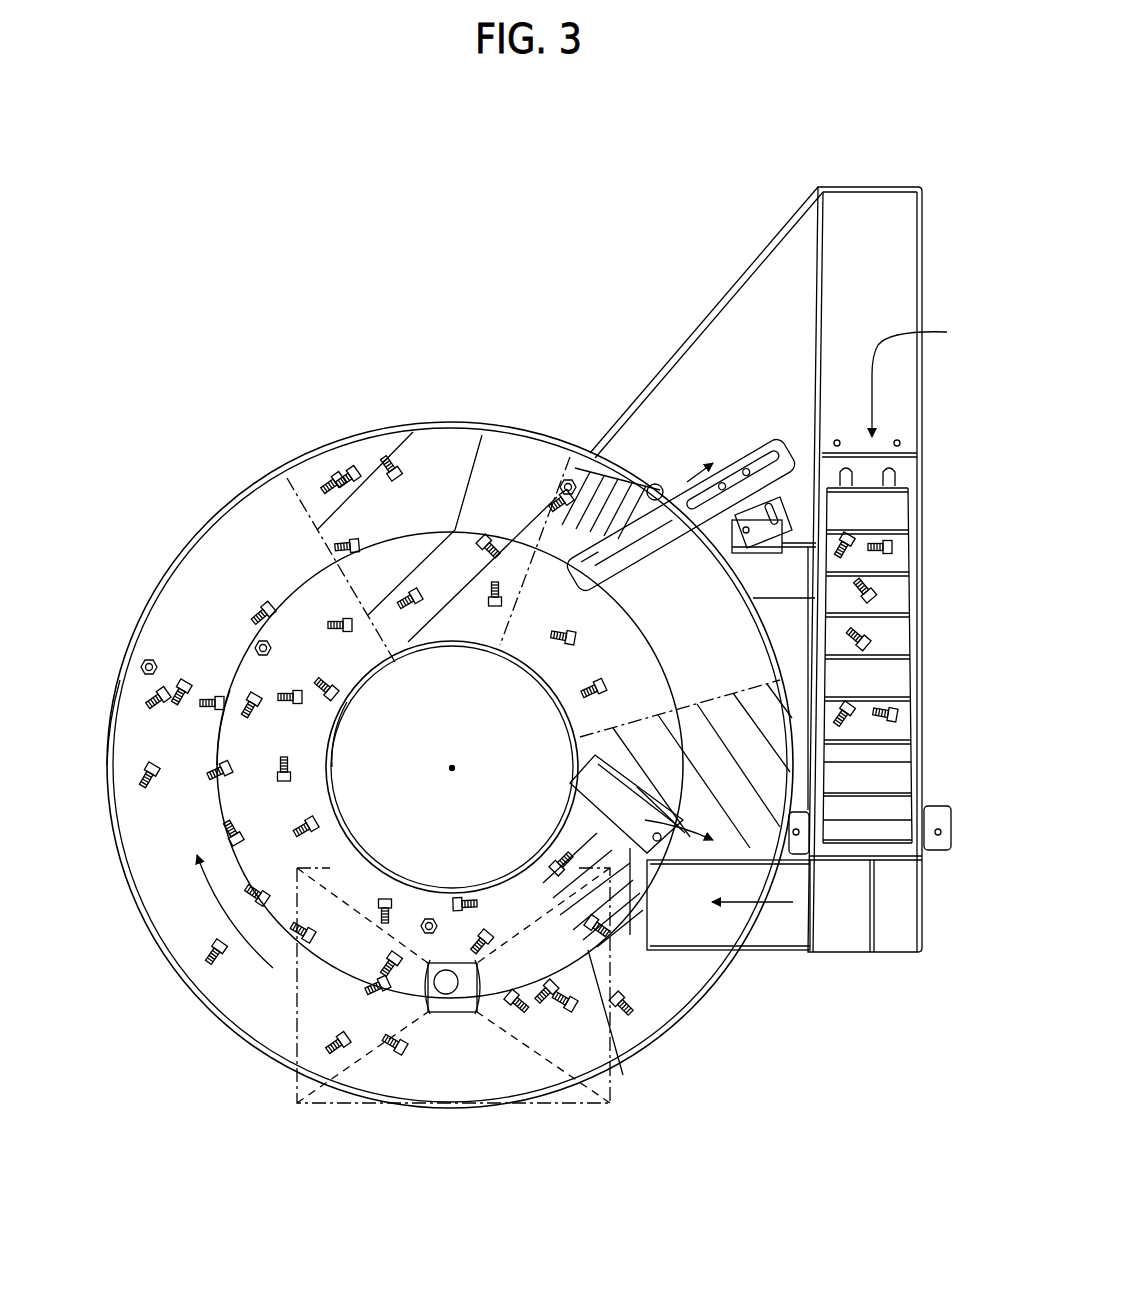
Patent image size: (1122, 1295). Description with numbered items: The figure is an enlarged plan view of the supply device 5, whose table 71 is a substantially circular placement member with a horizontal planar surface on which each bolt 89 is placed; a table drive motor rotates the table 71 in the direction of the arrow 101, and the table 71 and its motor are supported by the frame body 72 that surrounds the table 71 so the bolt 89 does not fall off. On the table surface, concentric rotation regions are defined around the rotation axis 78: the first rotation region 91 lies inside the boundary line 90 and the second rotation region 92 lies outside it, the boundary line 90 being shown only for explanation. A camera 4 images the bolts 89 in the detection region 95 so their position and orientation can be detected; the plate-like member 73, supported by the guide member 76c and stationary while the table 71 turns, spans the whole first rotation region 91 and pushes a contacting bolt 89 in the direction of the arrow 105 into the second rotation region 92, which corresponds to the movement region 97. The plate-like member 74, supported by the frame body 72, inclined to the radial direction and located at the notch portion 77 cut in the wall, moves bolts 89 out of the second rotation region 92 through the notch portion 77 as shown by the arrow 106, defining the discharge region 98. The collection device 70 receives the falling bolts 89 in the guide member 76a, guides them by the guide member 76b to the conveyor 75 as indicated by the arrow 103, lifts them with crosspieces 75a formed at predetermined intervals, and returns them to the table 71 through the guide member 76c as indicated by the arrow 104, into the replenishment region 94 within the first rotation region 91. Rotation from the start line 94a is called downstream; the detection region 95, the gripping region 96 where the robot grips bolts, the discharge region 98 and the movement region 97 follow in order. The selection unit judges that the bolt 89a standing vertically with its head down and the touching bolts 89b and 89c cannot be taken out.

The camera 4 is at (455, 1012).
The supply device 5 is at (722, 175).
The collection device 70 is at (790, 609).
The table 71 is at (160, 870).
The frame body 72 is at (104, 780).
The plate-like member 73 is at (687, 870).
The plate-like member 74 is at (785, 518).
The conveyor 75 is at (895, 680).
The crosspieces 75a is at (895, 712).
The guide member 76a is at (750, 297).
The guide member 76b is at (895, 212).
The guide member 76c is at (762, 928).
The notch portion 77 is at (565, 475).
The rotation axis 78 is at (452, 768).
The bolt 89 is at (150, 680).
The bolt 89a is at (533, 460).
The bolt 89b is at (355, 470).
The bolt 89c is at (330, 485).
The boundary line 90 is at (307, 583).
The first rotation region 91 is at (300, 610).
The second rotation region 92 is at (185, 607).
The replenishment region 94 is at (598, 933).
The start line 94a is at (625, 910).
The detection region 95 is at (293, 1020).
The gripping region 96 is at (452, 455).
The movement region 97 is at (748, 772).
The discharge region 98 is at (625, 490).
The arrow 101 is at (213, 897).
The arrow 103 is at (918, 385).
The arrow 104 is at (760, 927).
The arrow 105 is at (748, 797).
The arrow 106 is at (688, 470).